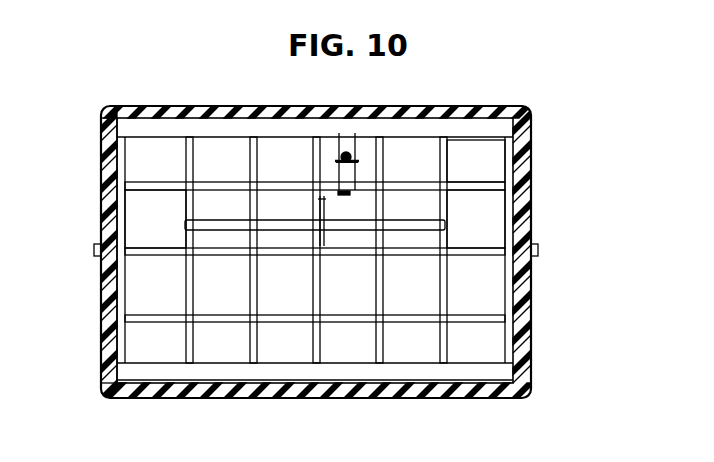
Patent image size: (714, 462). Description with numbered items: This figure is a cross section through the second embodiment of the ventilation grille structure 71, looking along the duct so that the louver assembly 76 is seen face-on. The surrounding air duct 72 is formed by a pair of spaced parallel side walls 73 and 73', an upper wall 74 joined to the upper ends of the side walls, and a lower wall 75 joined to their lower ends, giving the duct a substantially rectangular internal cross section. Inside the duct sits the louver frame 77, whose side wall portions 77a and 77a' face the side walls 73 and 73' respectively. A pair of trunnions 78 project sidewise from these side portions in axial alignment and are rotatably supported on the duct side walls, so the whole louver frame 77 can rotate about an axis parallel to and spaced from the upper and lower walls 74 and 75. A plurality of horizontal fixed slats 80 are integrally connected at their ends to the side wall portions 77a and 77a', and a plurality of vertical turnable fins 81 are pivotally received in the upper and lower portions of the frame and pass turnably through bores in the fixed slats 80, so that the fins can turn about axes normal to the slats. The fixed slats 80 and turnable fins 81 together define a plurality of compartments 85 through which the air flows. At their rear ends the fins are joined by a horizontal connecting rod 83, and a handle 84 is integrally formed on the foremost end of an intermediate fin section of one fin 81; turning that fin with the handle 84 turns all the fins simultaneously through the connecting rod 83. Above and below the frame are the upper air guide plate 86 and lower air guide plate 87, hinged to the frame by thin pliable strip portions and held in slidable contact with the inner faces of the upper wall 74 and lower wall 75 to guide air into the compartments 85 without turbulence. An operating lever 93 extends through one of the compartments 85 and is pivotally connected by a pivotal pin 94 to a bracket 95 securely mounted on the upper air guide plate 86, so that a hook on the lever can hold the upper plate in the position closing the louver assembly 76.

The ventilation grille structure 71 is at (440, 396).
The air duct 72 is at (528, 103).
The side wall 73 is at (546, 246).
The side wall 73' is at (83, 256).
The upper wall 74 is at (433, 106).
The lower wall 75 is at (224, 398).
The louver assembly 76 is at (390, 298).
The louver frame 77 is at (132, 297).
The side wall portion 77a is at (476, 219).
The side wall portion 77a' is at (155, 219).
The trunnion 78 is at (94, 250).
The horizontal fixed slat 80 is at (478, 181).
The vertical turnable fin 81 is at (321, 281).
The horizontal connecting rod 83 is at (272, 221).
The handle 84 is at (324, 211).
The compartment 85 is at (250, 289).
The upper air guide plate 86 is at (222, 139).
The lower air guide plate 87 is at (228, 367).
The operating lever 93 is at (380, 184).
The pivotal pin 94 is at (352, 160).
The bracket 95 is at (340, 156).